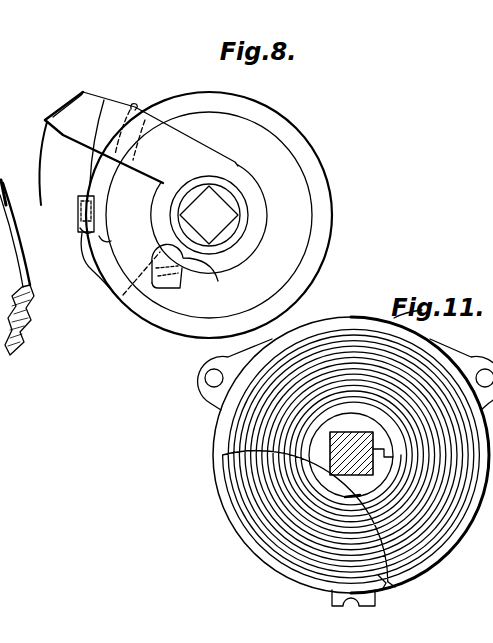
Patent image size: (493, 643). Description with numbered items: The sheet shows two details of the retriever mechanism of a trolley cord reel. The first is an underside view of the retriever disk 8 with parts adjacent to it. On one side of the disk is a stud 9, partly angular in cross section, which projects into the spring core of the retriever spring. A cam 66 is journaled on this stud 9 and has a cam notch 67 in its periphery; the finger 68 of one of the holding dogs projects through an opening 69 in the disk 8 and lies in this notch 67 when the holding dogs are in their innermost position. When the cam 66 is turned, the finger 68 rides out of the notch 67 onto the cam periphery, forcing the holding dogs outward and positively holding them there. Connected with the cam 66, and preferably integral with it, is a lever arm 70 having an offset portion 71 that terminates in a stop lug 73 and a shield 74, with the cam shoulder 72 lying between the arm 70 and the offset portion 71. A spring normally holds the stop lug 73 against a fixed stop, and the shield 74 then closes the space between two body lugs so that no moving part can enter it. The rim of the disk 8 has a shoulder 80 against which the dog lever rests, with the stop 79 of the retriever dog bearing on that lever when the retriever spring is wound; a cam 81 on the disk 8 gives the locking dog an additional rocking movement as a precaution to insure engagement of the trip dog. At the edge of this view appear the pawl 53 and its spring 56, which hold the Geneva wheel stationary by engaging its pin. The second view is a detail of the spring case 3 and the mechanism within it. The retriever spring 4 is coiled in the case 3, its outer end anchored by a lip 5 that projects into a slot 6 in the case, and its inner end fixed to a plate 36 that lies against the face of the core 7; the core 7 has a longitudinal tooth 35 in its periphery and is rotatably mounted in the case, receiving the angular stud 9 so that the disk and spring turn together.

In FIG. 8, the retriever disk 8 is at (310, 252).
In FIG. 8, the stud 9 is at (219, 223).
In FIG. 8, the cam 66 is at (262, 222).
In FIG. 8, the cam notch 67 is at (209, 247).
In FIG. 8, the lever arm 70 is at (176, 140).
In FIG. 8, the offset portion 71 is at (98, 122).
In FIG. 8, the cam shoulder 72 is at (104, 141).
In FIG. 8, the stop lug 73 is at (62, 108).
In FIG. 8, the shield 74 is at (49, 151).
In FIG. 8, the stop 79 is at (90, 210).
In FIG. 8, the shoulder 80 is at (106, 240).
In FIG. 8, the cam 81 is at (90, 259).
In FIG. 8, the finger 68 is at (145, 268).
In FIG. 8, the opening 69 is at (156, 263).
In FIG. 8, the spring 56 is at (28, 305).
In FIG. 8, the pawl 53 is at (15, 274).
In FIG. 11, the spring case 3 is at (442, 362).
In FIG. 11, the retriever spring 4 is at (255, 442).
In FIG. 11, the lip 5 is at (384, 586).
In FIG. 11, the slot 6 is at (393, 588).
In FIG. 11, the core 7 is at (318, 455).
In FIG. 11, the longitudinal tooth 35 is at (382, 442).
In FIG. 11, the plate 36 is at (347, 474).